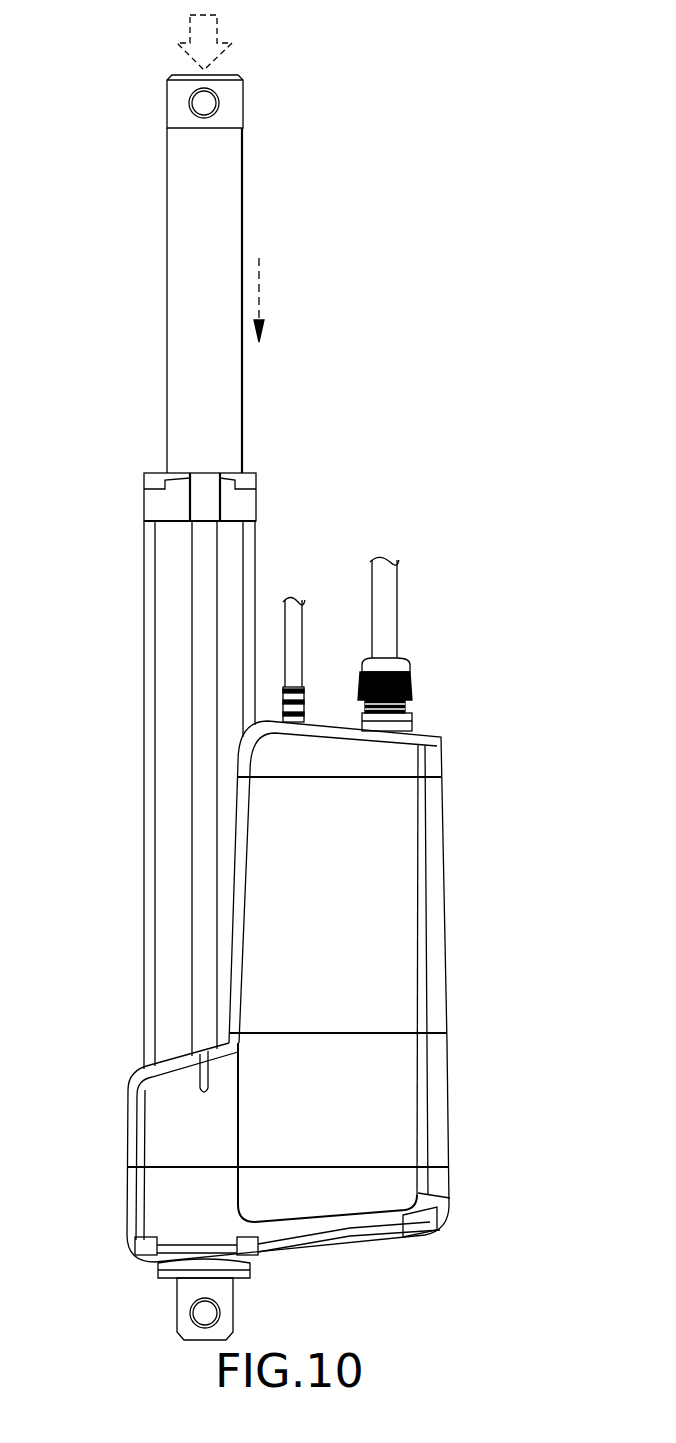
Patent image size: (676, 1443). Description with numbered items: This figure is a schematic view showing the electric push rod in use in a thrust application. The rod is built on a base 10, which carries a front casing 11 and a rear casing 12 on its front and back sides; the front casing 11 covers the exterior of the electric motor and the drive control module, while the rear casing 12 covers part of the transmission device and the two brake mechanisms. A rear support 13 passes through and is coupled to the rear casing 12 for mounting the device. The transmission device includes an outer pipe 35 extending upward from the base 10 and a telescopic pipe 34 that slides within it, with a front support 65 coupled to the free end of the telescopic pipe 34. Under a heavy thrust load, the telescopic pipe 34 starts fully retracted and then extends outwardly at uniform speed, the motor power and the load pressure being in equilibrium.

The base 10 is at (437, 1118).
The front casing 11 is at (434, 893).
The rear casing 12 is at (330, 1252).
The rear support 13 is at (183, 1305).
The telescopic pipe 34 is at (180, 274).
The outer pipe 35 is at (168, 743).
The front support 65 is at (180, 104).